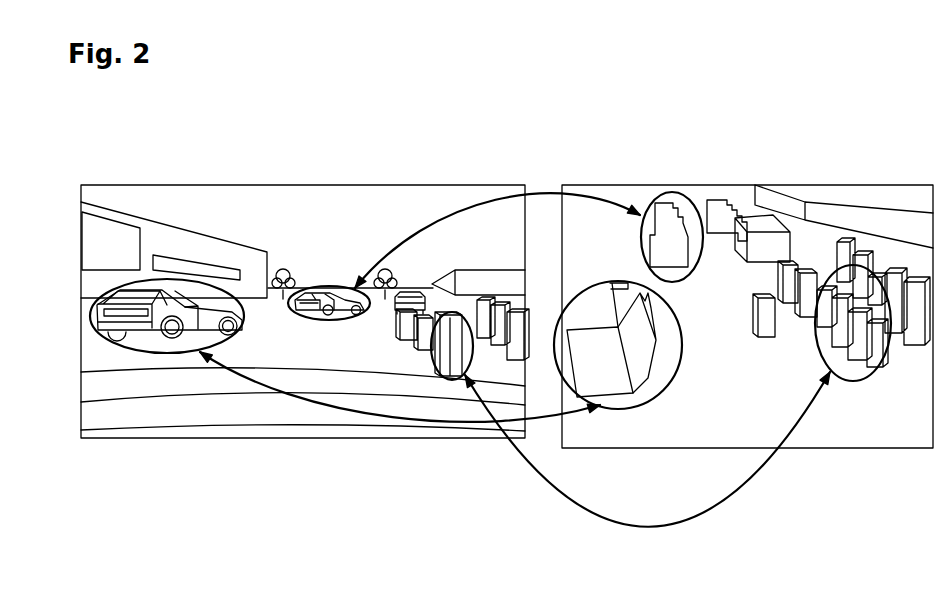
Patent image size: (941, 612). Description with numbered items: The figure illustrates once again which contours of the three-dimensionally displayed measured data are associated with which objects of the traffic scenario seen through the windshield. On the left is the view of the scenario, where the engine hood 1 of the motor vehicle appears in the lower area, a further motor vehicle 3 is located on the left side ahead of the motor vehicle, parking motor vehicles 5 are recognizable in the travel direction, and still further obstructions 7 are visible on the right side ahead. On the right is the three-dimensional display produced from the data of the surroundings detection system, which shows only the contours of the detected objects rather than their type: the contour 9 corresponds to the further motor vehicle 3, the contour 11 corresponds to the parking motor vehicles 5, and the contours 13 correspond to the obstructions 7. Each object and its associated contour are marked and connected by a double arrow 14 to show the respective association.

The engine hood 1 is at (218, 382).
The further motor vehicle 3 is at (200, 295).
The parking motor vehicles 5 is at (331, 291).
The obstructions 7 is at (457, 356).
The contour of motor vehicle 9 is at (638, 375).
The contour of parking motor vehicles 11 is at (675, 215).
The contours of obstructions 13 is at (882, 370).
The double arrow 14 is at (541, 192).